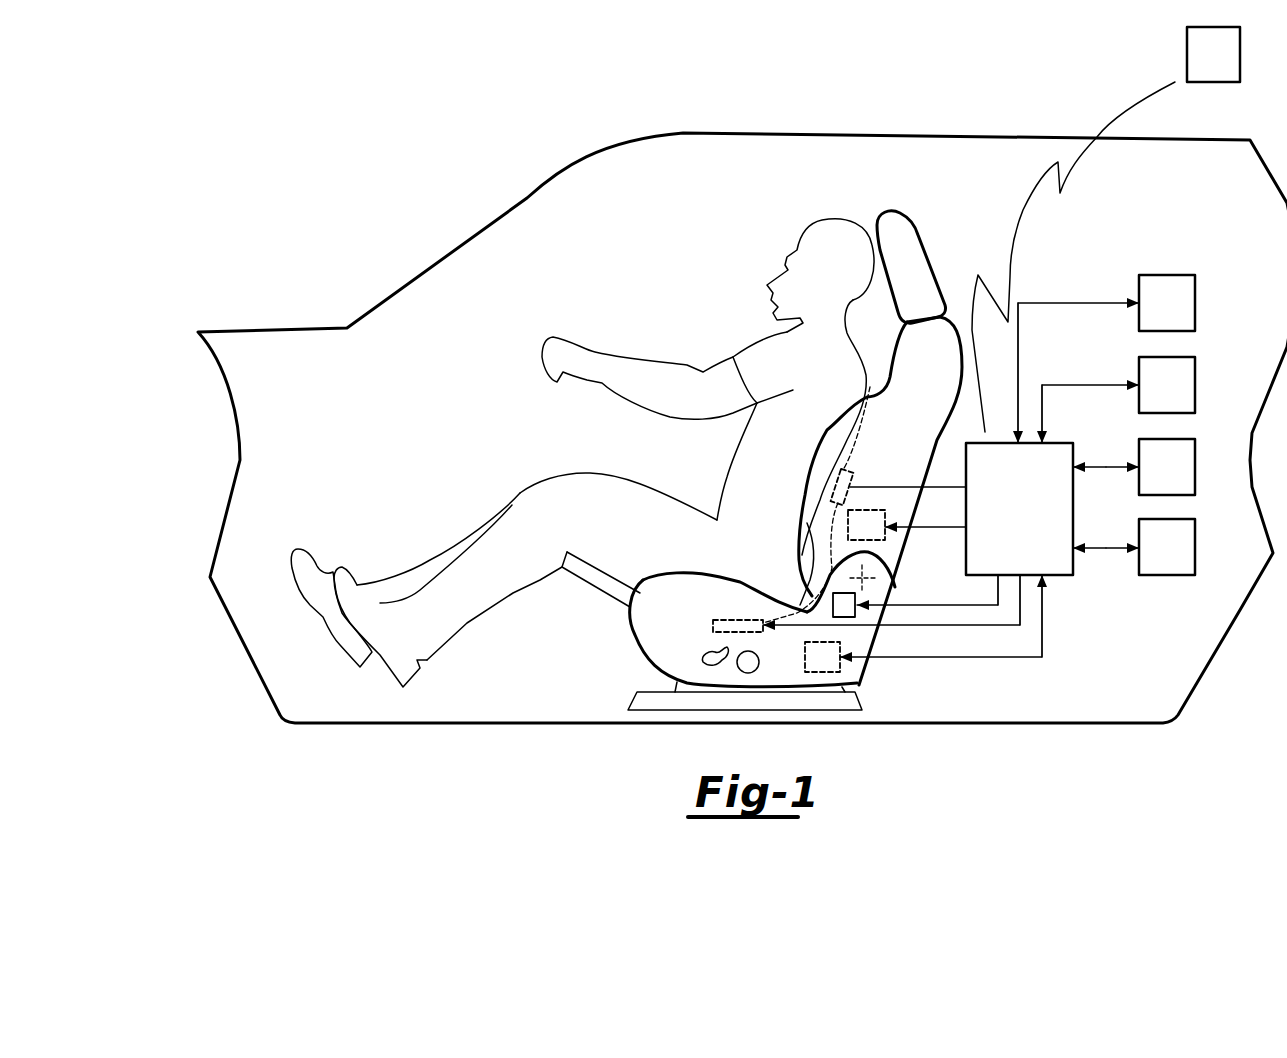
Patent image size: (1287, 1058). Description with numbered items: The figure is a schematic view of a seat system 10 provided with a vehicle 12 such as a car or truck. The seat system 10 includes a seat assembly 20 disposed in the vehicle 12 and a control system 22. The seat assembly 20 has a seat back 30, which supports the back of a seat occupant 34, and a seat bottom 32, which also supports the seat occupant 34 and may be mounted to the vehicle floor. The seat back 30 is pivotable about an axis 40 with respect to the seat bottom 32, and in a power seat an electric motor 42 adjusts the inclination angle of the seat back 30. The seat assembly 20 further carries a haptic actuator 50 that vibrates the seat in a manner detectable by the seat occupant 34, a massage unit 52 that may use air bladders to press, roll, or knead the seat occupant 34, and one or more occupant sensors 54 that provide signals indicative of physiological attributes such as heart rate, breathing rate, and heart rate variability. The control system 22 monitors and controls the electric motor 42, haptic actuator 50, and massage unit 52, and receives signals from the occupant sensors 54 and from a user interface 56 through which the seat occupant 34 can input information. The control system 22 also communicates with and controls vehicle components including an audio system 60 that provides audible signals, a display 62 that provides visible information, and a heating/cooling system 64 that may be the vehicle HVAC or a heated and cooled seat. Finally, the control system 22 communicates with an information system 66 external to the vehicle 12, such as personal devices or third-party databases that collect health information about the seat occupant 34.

The seat system 10 is at (953, 230).
The vehicle 12 is at (525, 198).
The seat assembly 20 is at (900, 217).
The control system 22 is at (1019, 550).
The seat back 30 is at (917, 502).
The seat bottom 32 is at (650, 660).
The seat occupant 34 is at (520, 493).
The axis 40 is at (807, 523).
The electric motor 42 is at (807, 600).
The haptic actuator 50 is at (923, 623).
The massage unit 52 is at (907, 525).
The occupant sensors 54 is at (853, 463).
The user interface 56 is at (1106, 359).
The audio system 60 is at (1118, 400).
The display 62 is at (1134, 467).
The heating/cooling system 64 is at (1134, 547).
The information system 66 is at (1106, 229).